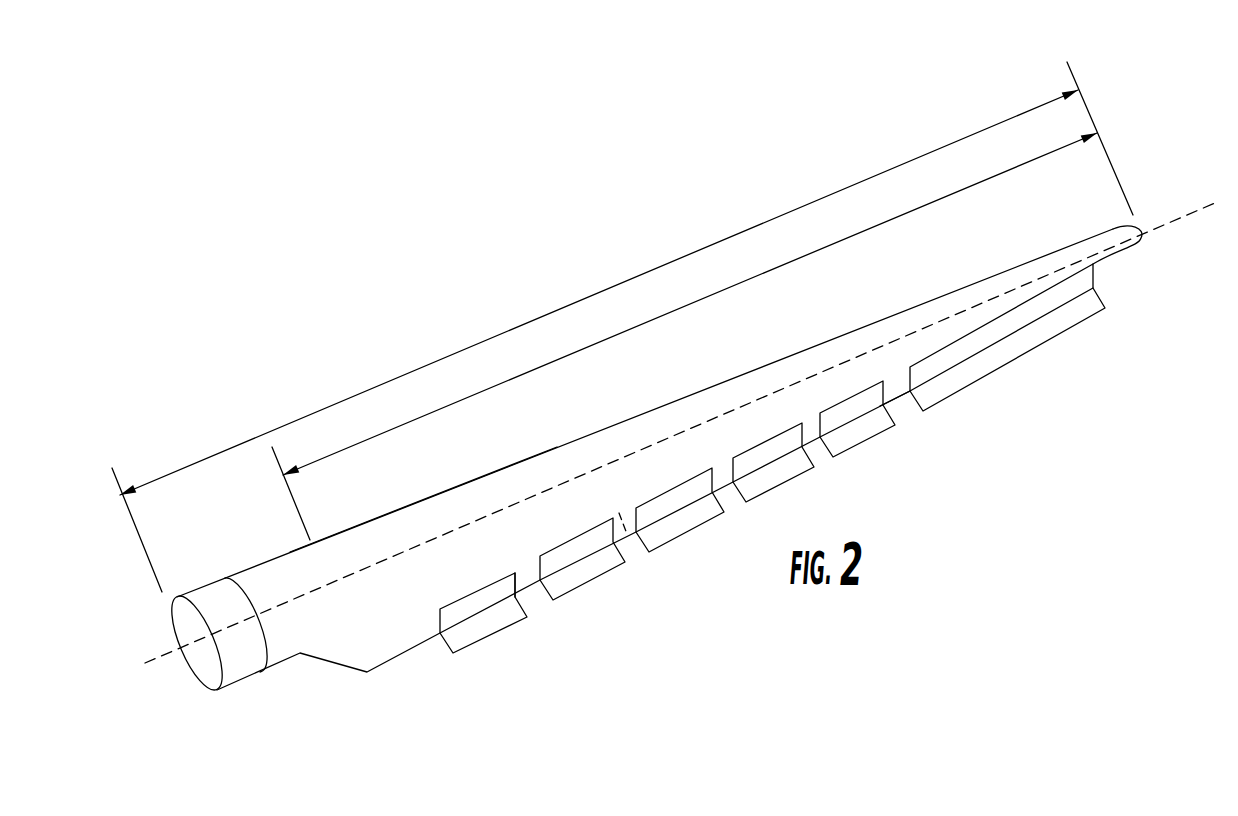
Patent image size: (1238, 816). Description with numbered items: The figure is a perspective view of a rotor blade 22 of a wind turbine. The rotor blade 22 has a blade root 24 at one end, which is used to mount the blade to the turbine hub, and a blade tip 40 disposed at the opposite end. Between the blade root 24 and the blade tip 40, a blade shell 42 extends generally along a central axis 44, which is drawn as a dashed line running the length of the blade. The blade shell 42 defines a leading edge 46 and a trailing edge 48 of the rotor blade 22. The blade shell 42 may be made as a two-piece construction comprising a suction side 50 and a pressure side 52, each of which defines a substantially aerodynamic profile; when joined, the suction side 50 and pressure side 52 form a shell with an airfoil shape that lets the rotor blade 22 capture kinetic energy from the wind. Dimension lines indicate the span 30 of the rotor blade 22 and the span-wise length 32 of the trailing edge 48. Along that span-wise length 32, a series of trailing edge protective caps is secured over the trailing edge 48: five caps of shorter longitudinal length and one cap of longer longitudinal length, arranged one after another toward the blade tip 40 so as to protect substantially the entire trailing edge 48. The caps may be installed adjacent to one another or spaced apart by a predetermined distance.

The rotor blade 22 is at (365, 313).
The blade root 24 is at (194, 588).
The span 30 is at (712, 241).
The span-wise length 32 is at (748, 279).
The blade tip 40 is at (1138, 232).
The blade shell 42 is at (290, 578).
The central axis 44 is at (1157, 227).
The leading edge 46 is at (557, 450).
The trailing edge 48 is at (895, 398).
The suction side 50 is at (624, 535).
The pressure side 52 is at (523, 570).